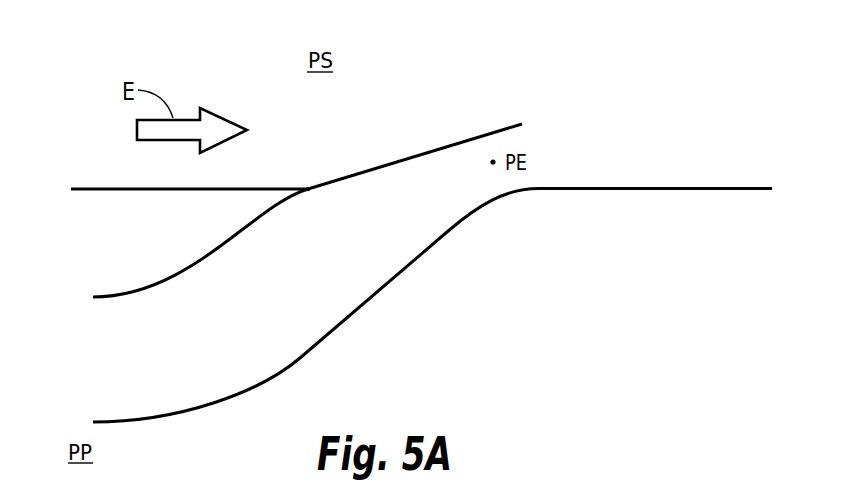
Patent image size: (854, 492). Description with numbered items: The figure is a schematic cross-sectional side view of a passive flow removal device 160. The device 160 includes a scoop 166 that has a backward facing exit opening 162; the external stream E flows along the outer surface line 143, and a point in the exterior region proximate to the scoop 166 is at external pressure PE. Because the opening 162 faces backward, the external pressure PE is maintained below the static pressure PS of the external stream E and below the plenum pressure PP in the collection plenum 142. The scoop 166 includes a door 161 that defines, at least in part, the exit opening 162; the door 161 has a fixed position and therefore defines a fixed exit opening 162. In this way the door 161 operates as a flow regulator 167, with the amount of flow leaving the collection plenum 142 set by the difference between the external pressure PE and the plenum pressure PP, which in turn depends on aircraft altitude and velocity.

The collection plenum 142 is at (71, 268).
The surface line 143 is at (100, 189).
The passive flow removal device 160 is at (473, 111).
The door 161 is at (423, 152).
The exit opening 162 is at (505, 144).
The scoop 166 is at (247, 226).
The flow regulator 167 is at (452, 178).